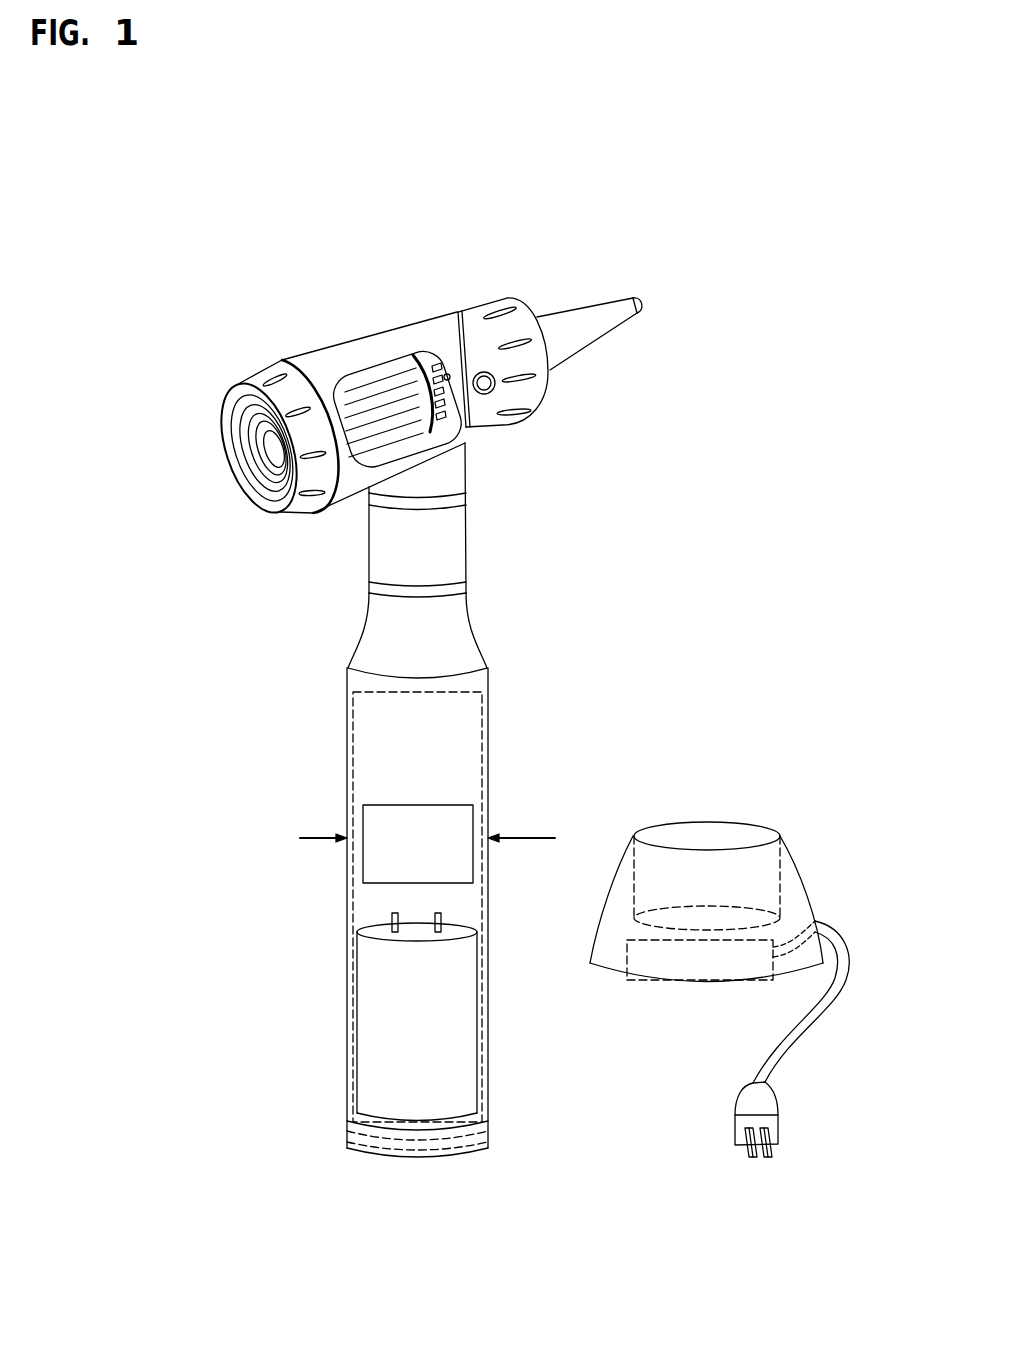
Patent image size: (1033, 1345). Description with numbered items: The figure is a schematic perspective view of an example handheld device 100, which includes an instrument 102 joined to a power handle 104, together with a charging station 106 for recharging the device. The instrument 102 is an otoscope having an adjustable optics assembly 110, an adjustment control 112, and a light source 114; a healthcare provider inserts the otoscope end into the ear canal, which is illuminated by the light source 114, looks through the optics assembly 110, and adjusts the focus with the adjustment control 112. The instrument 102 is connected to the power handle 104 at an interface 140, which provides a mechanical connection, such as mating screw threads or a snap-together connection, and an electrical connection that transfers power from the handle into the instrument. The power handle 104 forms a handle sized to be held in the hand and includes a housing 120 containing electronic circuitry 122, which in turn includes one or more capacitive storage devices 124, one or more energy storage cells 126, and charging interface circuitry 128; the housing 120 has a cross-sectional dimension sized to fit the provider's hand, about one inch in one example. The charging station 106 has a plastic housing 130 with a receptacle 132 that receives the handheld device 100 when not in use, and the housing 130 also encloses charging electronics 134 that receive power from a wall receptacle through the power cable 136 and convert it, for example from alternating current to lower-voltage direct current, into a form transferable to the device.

The handheld device 100 is at (227, 310).
The instrument 102 is at (343, 351).
The power handle 104 is at (244, 679).
The charging station 106 is at (612, 888).
The adjustable optics assembly 110 is at (266, 449).
The adjustment control 112 is at (386, 385).
The light source 114 is at (644, 304).
The housing 120 is at (346, 681).
The electronic circuitry 122 is at (353, 703).
The capacitive storage device 124 is at (362, 967).
The energy storage cells 126 is at (461, 804).
The charging interface circuitry 128 is at (360, 1138).
The housing 130 is at (797, 870).
The receptacle 132 is at (738, 833).
The charging electronics 134 is at (627, 968).
The power cable 136 is at (752, 1104).
The interface 140 is at (496, 581).